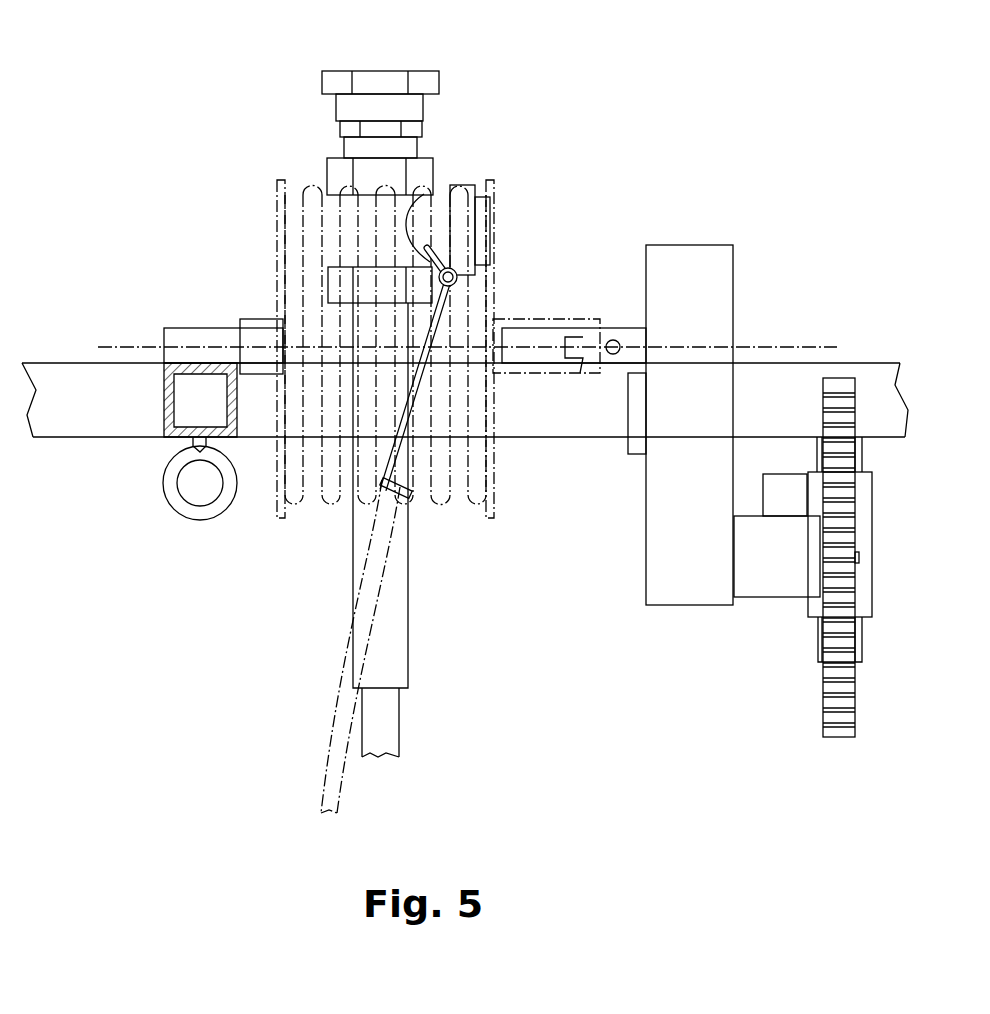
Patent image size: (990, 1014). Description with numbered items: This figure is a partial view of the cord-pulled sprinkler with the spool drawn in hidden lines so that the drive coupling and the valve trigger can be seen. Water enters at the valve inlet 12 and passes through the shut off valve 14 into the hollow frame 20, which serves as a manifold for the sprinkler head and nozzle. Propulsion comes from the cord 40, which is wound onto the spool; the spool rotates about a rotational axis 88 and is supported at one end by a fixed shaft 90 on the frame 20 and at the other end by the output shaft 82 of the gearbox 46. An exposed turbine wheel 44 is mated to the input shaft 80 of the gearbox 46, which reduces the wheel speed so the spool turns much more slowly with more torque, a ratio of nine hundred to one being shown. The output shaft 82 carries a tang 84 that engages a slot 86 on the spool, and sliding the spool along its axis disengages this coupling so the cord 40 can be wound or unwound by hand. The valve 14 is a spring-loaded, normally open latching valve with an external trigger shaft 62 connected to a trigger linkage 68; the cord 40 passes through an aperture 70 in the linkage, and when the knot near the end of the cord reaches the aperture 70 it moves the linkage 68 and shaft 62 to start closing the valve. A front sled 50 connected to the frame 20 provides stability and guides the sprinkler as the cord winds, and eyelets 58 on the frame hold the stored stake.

The valve inlet 12 is at (428, 72).
The shut off valve 14 is at (327, 163).
The hollow frame 20 is at (164, 415).
The cord 40 is at (320, 765).
The turbine wheel 44 is at (855, 690).
The gearbox 46 is at (733, 272).
The front sled 50 is at (399, 725).
The eyelets 58 is at (163, 483).
The external trigger shaft 62 is at (455, 268).
The trigger linkage 68 is at (410, 447).
The aperture 70 is at (380, 495).
The input shaft 80 is at (859, 557).
The output shaft 82 is at (632, 338).
The tang 84 is at (612, 340).
The slot 86 is at (580, 378).
The rotational axis 88 is at (128, 346).
The fixed shaft 90 is at (262, 328).